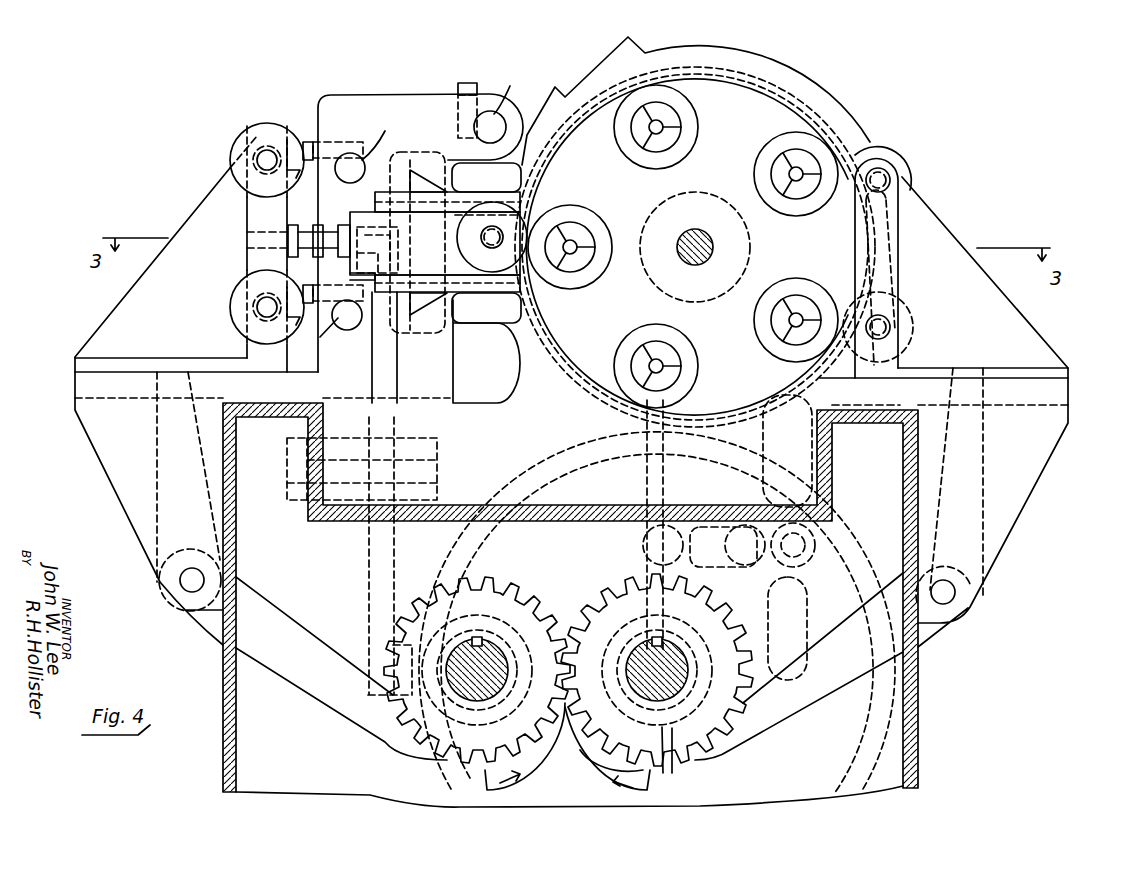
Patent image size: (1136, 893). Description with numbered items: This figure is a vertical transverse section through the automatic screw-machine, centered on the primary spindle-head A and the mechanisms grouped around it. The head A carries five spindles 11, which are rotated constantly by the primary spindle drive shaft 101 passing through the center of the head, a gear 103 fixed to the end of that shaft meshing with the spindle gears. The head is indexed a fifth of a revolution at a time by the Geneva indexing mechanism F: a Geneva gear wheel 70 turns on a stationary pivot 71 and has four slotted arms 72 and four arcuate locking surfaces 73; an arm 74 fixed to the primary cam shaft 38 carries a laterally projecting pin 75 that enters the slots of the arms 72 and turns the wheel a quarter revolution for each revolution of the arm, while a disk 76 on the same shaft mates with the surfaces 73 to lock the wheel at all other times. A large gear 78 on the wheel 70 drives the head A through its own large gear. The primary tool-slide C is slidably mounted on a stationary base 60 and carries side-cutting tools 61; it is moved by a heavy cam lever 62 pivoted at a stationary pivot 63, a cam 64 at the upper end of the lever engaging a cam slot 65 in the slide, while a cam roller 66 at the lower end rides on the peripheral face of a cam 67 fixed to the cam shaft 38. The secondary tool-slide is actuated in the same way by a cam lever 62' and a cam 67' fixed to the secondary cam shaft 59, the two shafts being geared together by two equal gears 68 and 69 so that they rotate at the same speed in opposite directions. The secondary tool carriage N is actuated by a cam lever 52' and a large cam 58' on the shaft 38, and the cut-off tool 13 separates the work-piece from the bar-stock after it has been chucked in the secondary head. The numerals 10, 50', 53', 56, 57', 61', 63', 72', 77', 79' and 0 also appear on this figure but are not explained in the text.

The frame 10 is at (600, 61).
The spindles 11 is at (755, 148).
The cut-off tool 13 is at (438, 242).
The primary cam shaft 38 is at (643, 697).
The slide block 50' is at (455, 267).
The cam lever 52' is at (378, 493).
The guide 53' is at (362, 469).
The brace 56 is at (393, 707).
The slide 57' is at (430, 551).
The large cam 58' is at (657, 610).
The secondary cam shaft 59 is at (485, 695).
The stationary base 60 is at (1057, 398).
The side-cutting tools 61 is at (883, 245).
The rollers 61' is at (276, 231).
The cam lever 62 is at (916, 601).
The cam lever 62' is at (209, 580).
The stationary pivot 63 is at (966, 589).
The pivot hole 63' is at (166, 580).
The cam 64 is at (967, 380).
The cam slot 65 is at (988, 376).
The cam roller 66 is at (665, 755).
The cam 67 is at (607, 755).
The cam 67' is at (525, 748).
The gear 68 is at (606, 598).
The gear 69 is at (490, 576).
The Geneva gear wheel 70 is at (840, 607).
The stationary pivot 71 is at (793, 545).
The slotted arms 72 is at (787, 628).
The slide 72' is at (729, 522).
The arcuate locking surfaces 73 is at (738, 491).
The arm 74 is at (632, 564).
The pin 75 is at (638, 539).
The disk 76 is at (556, 602).
The pawl 77' is at (597, 655).
The large gear 78 is at (934, 524).
The turret ring 79' is at (594, 417).
The primary spindle drive shaft 101 is at (722, 226).
The gear 103 is at (752, 245).
The frame side 0 is at (197, 222).
The secondary tool carriage N is at (367, 107).
The primary spindle-head A is at (767, 95).
The primary tool-slide C is at (920, 207).
The primary indexing mechanism F is at (810, 678).